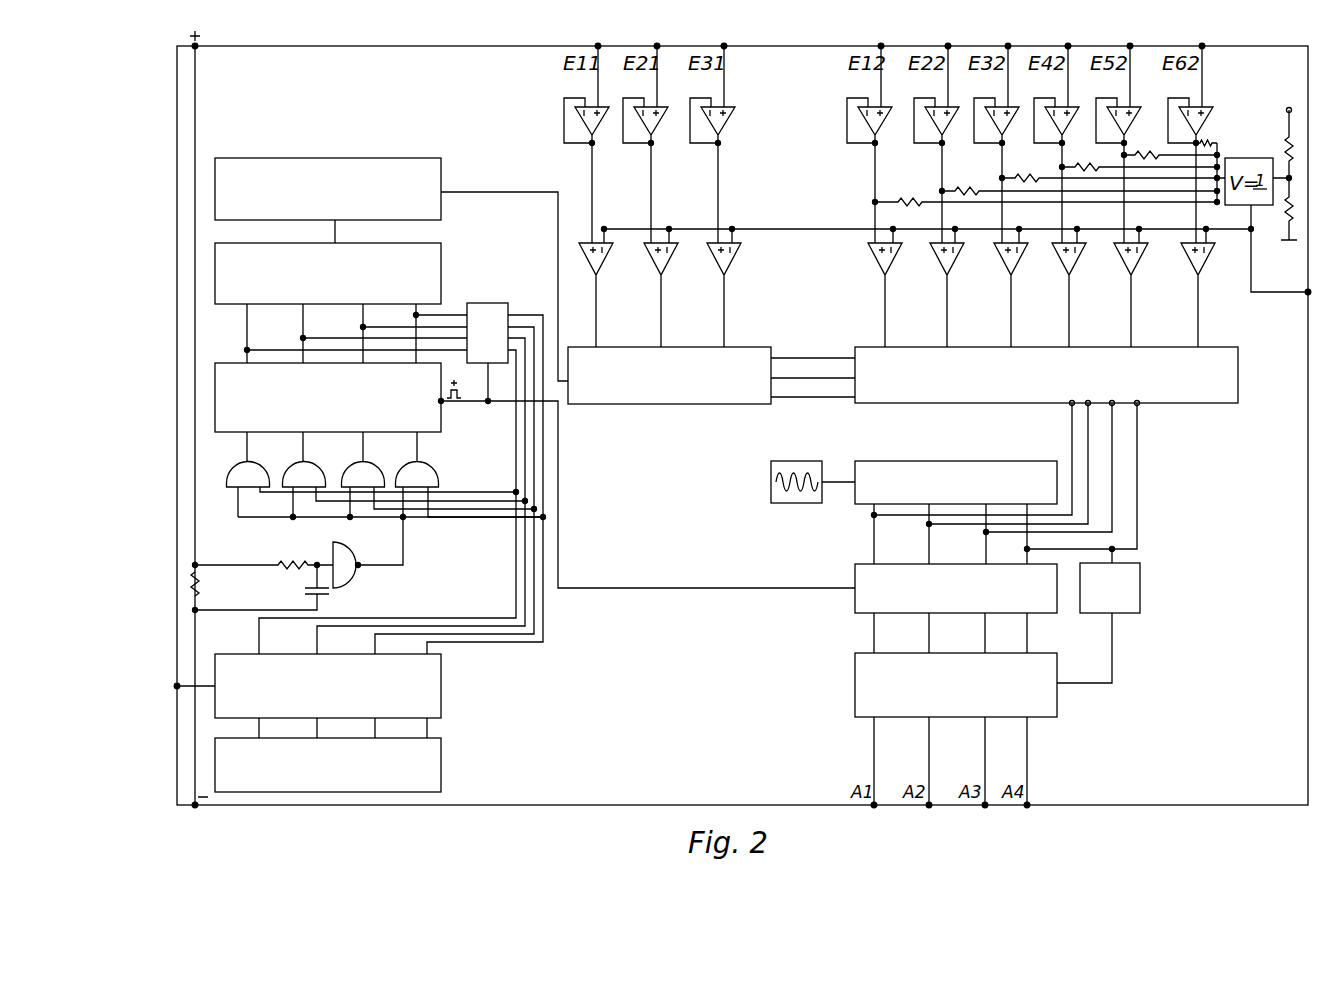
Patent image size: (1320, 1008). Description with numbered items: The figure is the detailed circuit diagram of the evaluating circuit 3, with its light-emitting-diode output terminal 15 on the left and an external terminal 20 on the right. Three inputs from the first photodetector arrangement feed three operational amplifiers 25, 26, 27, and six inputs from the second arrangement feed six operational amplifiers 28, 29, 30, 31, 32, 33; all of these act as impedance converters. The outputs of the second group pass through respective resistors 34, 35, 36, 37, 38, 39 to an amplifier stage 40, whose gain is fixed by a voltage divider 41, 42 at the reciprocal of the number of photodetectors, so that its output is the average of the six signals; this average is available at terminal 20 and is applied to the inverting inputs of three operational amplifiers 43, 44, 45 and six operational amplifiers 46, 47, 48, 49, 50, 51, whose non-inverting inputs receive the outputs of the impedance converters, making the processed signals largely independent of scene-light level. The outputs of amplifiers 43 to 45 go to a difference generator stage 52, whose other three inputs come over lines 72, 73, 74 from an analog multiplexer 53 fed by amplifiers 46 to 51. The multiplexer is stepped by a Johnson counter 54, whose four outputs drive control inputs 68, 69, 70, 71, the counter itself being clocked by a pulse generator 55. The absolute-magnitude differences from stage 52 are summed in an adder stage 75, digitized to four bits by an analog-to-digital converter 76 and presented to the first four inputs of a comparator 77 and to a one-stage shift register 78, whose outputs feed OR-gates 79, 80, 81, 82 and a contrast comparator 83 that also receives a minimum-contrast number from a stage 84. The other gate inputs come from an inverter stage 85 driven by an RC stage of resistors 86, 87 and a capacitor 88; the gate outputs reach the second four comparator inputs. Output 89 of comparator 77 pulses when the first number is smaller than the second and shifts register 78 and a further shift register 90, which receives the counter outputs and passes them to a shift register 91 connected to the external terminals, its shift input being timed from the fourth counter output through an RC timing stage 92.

The evaluating circuit 3 is at (1281, 507).
The output terminal 15 is at (181, 687).
The external terminal 20 is at (1307, 294).
The operational amplifier 25 is at (600, 125).
The operational amplifier 26 is at (659, 125).
The operational amplifier 27 is at (726, 125).
The operational amplifier 28 is at (883, 125).
The operational amplifier 29 is at (950, 125).
The operational amplifier 30 is at (1010, 125).
The operational amplifier 31 is at (1070, 125).
The operational amplifier 32 is at (1132, 125).
The operational amplifier 33 is at (1188, 118).
The resistor 34 is at (904, 206).
The resistor 35 is at (968, 195).
The resistor 36 is at (1028, 182).
The resistor 37 is at (1090, 170).
The resistor 38 is at (1146, 158).
The resistor 39 is at (1210, 128).
The amplifier stage 40 is at (1217, 141).
The voltage divider 41 is at (1287, 151).
The voltage divider 42 is at (1283, 230).
The operational amplifier 43 is at (601, 266).
The operational amplifier 44 is at (666, 266).
The operational amplifier 45 is at (729, 266).
The operational amplifier 46 is at (890, 266).
The operational amplifier 47 is at (951, 266).
The operational amplifier 48 is at (1014, 266).
The operational amplifier 49 is at (1072, 266).
The operational amplifier 50 is at (1134, 266).
The operational amplifier 51 is at (1204, 268).
The difference generator stage 52 is at (739, 360).
The analog multiplexer 53 is at (861, 353).
The counter 54 is at (860, 500).
The pulse generator 55 is at (774, 504).
The control input 68 is at (973, 448).
The control input 69 is at (1009, 453).
The control input 70 is at (1051, 457).
The control input 71 is at (1087, 465).
The line 72 is at (787, 356).
The line 73 is at (827, 374).
The line 74 is at (817, 400).
The adder stage 75 is at (437, 166).
The analog-to-digital converter 76 is at (440, 275).
The comparator 77 is at (217, 363).
The one-stage shift register 78 is at (488, 299).
The OR-gate 79 is at (244, 479).
The OR-gate 80 is at (301, 479).
The OR-gate 81 is at (361, 479).
The OR-gate 82 is at (418, 479).
The contrast comparator 83 is at (441, 687).
The stage 84 is at (441, 767).
The inverter stage 85 is at (353, 564).
The resistor 86 is at (292, 563).
The resistor 87 is at (199, 594).
The capacitor 88 is at (305, 594).
The output 89 is at (444, 403).
The one-stage shift register 90 is at (855, 607).
The one-stage shift register 91 is at (855, 670).
The RC timing stage 92 is at (1102, 616).